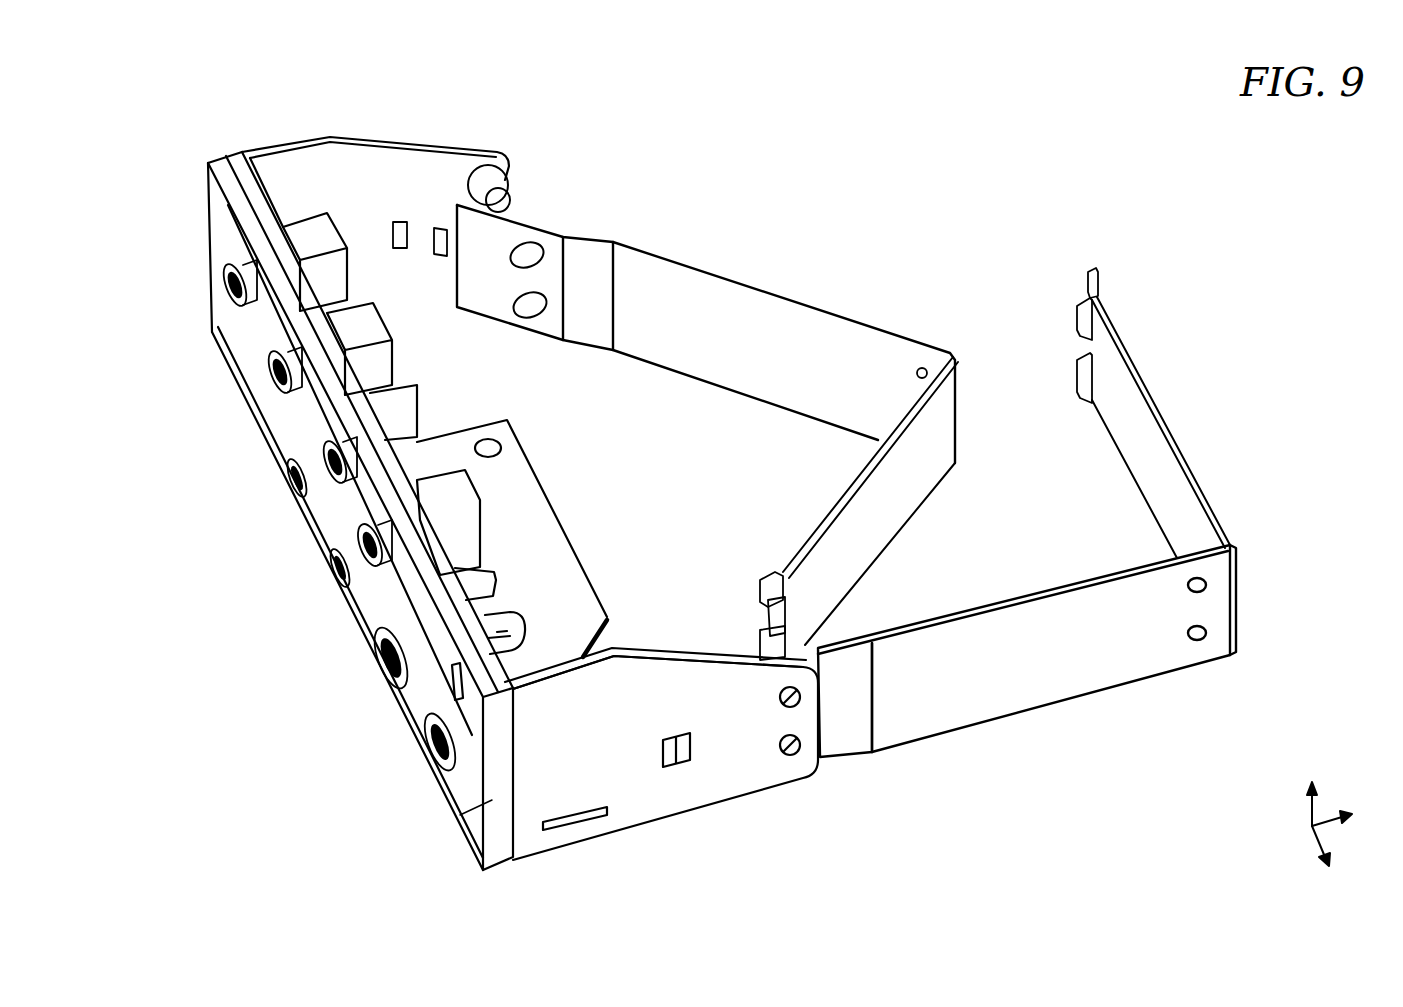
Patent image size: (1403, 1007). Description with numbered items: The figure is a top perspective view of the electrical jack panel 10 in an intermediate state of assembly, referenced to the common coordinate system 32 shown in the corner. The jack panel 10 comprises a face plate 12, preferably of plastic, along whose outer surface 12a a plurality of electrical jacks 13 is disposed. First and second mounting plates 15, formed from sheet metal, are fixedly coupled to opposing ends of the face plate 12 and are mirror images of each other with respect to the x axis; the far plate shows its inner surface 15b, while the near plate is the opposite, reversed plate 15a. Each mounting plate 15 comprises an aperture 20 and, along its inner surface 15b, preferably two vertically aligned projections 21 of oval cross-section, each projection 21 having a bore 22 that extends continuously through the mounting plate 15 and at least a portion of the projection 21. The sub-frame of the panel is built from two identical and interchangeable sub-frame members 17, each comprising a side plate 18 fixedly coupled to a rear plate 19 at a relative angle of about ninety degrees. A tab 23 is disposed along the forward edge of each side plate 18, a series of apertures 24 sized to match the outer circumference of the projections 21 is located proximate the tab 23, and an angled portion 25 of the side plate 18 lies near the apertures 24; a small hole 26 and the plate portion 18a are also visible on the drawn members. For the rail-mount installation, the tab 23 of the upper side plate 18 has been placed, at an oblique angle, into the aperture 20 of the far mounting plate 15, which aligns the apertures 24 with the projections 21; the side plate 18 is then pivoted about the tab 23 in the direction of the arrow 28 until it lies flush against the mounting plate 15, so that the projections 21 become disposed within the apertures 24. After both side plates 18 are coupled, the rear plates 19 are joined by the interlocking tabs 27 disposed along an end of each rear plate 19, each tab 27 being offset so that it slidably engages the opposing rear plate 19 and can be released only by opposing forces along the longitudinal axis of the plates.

The electrical jack panel 10 is at (175, 578).
The face plate 12 is at (522, 762).
The outer surface of face plate 12a is at (450, 800).
The electrical jacks 13 is at (374, 662).
The mounting plate 15 is at (360, 135).
The first end plate of bracket 15a is at (665, 758).
The inner surface of mounting plate 15b is at (365, 366).
The sub-frame member 17 is at (848, 446).
The side plate 18 is at (663, 248).
The arm plate portion 18a is at (948, 697).
The rear plate 19 is at (1152, 380).
The aperture 20 is at (400, 220).
The projections 21 is at (506, 186).
The bore 22 is at (512, 206).
The tab 23 is at (436, 256).
The apertures 24 is at (530, 305).
The angled portion 25 is at (595, 327).
The pivot hole 26 is at (921, 368).
The interlocking tabs 27 is at (1092, 274).
The arrow 28 is at (823, 252).
The coordinate system 32 is at (1318, 820).